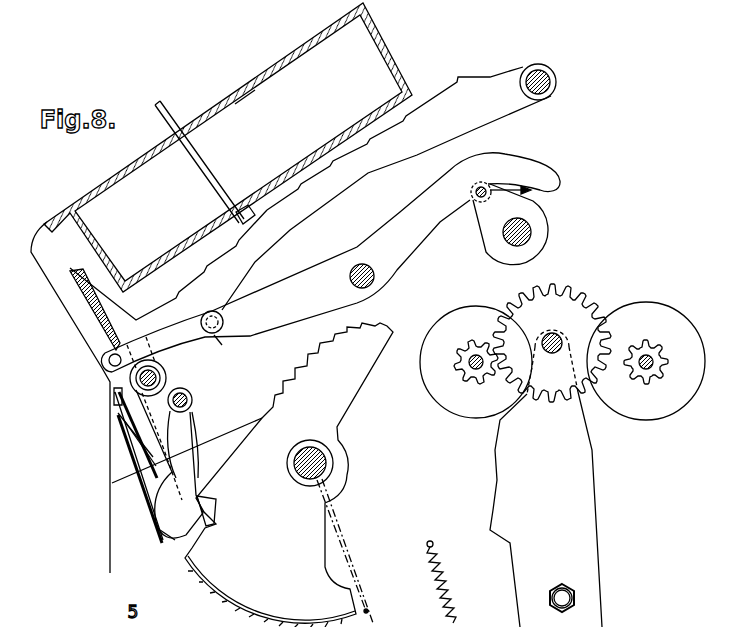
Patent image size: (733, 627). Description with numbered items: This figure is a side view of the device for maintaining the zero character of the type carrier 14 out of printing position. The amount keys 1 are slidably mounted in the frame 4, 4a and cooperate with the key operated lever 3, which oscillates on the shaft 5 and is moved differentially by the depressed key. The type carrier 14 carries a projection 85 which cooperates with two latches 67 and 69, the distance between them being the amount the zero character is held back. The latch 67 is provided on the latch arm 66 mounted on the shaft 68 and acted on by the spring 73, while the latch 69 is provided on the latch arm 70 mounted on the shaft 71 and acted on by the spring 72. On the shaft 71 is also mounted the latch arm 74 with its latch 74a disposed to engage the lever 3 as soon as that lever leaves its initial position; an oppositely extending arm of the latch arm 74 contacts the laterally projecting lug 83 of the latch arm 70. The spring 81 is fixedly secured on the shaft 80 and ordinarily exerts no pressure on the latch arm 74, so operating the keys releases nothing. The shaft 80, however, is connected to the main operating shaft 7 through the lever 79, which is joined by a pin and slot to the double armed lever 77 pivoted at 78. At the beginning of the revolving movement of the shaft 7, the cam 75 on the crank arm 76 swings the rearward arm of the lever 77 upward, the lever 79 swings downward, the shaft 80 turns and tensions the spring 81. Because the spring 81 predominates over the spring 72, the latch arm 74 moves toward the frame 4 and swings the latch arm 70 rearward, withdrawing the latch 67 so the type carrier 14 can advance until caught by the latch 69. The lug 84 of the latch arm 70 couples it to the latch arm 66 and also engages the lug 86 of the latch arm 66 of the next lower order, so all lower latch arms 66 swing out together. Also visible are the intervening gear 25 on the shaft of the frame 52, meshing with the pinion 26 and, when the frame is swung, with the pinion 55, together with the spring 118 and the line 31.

The amount key 1 is at (172, 114).
The key operated lever 3 is at (367, 173).
The key guiding frame 4 is at (84, 243).
The frame 4a is at (292, 55).
The shaft 5 is at (545, 93).
The main operating shaft 7 is at (531, 232).
The type carrier 14 is at (360, 378).
The intervening gear 25 is at (582, 305).
The pinion 26 is at (468, 376).
The center line 31 is at (368, 610).
The frame 52 is at (587, 472).
The pinion 55 is at (648, 378).
The latch arm 66 is at (187, 430).
The latch 67 is at (199, 503).
The shaft 68 is at (193, 402).
The latch 69 is at (190, 537).
The latch arm 70 is at (177, 477).
The shaft 71 is at (162, 377).
The spring 72 is at (142, 502).
The spring 73 is at (137, 443).
The latch arm 74 is at (120, 315).
The latch 74a is at (210, 311).
The cam 75 is at (474, 200).
The crank arm 76 is at (541, 220).
The double armed lever 77 is at (288, 283).
The pivot 78 is at (360, 264).
The lever 79 is at (208, 336).
The shaft 80 is at (109, 363).
The spring 81 is at (83, 302).
The lug 83 is at (123, 420).
The lug 84 is at (150, 452).
The projection 85 is at (193, 495).
The lug 86 is at (148, 475).
The spring 118 is at (441, 578).